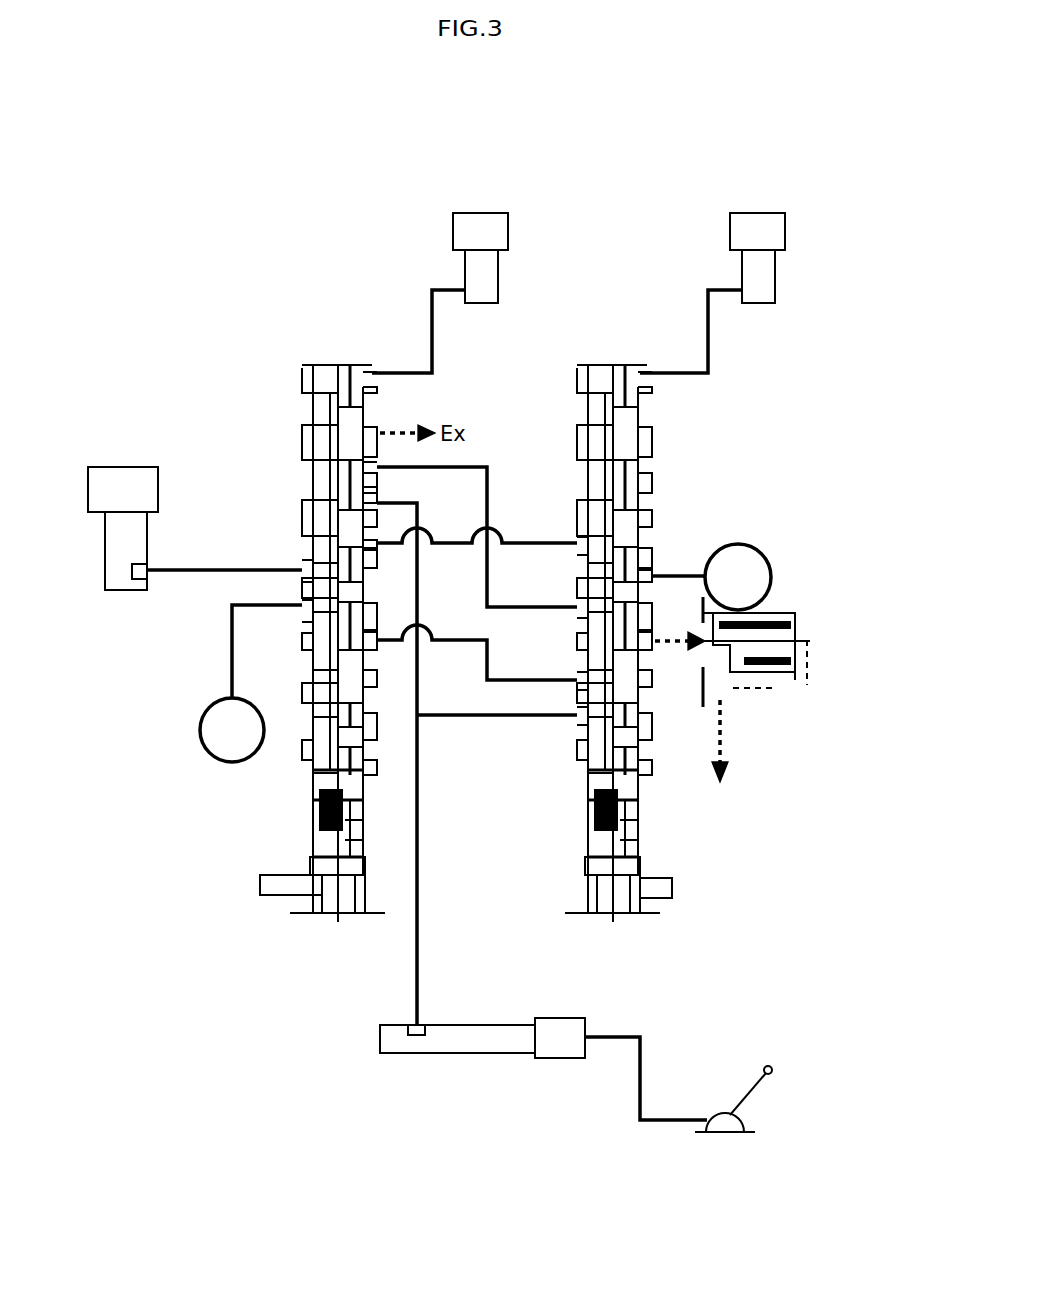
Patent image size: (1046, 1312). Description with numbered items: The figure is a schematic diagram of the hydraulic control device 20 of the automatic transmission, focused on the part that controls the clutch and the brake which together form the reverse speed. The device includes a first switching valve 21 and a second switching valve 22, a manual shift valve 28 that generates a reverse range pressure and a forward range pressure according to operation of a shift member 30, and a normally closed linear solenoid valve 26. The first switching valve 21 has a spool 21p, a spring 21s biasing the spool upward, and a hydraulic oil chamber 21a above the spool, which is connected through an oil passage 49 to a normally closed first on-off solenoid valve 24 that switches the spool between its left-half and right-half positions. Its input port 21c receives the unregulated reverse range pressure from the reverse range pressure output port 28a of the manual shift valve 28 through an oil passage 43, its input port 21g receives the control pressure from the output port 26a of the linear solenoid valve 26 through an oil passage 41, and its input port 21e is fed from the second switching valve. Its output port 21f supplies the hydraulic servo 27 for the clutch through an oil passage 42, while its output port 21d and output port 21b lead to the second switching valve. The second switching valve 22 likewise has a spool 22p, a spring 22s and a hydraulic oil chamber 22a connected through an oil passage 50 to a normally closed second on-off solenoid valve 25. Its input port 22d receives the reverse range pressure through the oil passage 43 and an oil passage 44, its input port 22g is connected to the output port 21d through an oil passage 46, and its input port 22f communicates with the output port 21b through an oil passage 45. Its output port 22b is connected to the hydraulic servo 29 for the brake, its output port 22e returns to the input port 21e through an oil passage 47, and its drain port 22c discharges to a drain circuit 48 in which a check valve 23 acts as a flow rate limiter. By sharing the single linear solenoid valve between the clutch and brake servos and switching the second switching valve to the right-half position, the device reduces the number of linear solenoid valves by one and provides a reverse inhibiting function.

The hydraulic control device 20 is at (288, 188).
The first switching valve 21 is at (322, 350).
The hydraulic oil chamber 21a is at (368, 372).
The output port (fifth output port) 21b is at (382, 470).
The input port (second reverse range pressure input port) 21c is at (382, 500).
The output port (second output port) 21d is at (380, 543).
The input port (first input port) 21e is at (373, 650).
The output port (first output port) 21f is at (300, 610).
The input port (control pressure input port) 21g is at (300, 568).
The spool 21p is at (322, 395).
The spring 21s is at (312, 845).
The second switching valve 22 is at (597, 350).
The hydraulic oil chamber 22a is at (640, 372).
The output port (third output port) 22b is at (665, 565).
The drain port 22c is at (650, 648).
The input port (first reverse range pressure input port) 22d is at (583, 728).
The output port (fourth output port) 22e is at (578, 678).
The input port (third input port) 22f is at (578, 605).
The input port (second input port) 22g is at (578, 540).
The spool 22p is at (600, 395).
The spring 22s is at (585, 845).
The check valve 23 is at (805, 613).
The first on-off solenoid valve 24 is at (500, 213).
The second on-off solenoid valve 25 is at (780, 213).
The linear solenoid valve 26 is at (120, 467).
The output port 26a is at (132, 580).
The hydraulic servo 27 is at (210, 766).
The manual shift valve 28 is at (366, 1074).
The reverse range pressure output port 28a is at (428, 1025).
The hydraulic servo 29 is at (752, 528).
The shift member 30 is at (774, 1068).
The oil passage 41 is at (200, 568).
The oil passage 42 is at (230, 655).
The oil passage 43 is at (420, 738).
The oil passage 44 is at (507, 718).
The oil passage 45 is at (470, 465).
The oil passage 46 is at (450, 548).
The oil passage 47 is at (460, 643).
The drain circuit 48 is at (728, 708).
The oil passage 49 is at (432, 290).
The oil passage 50 is at (708, 290).